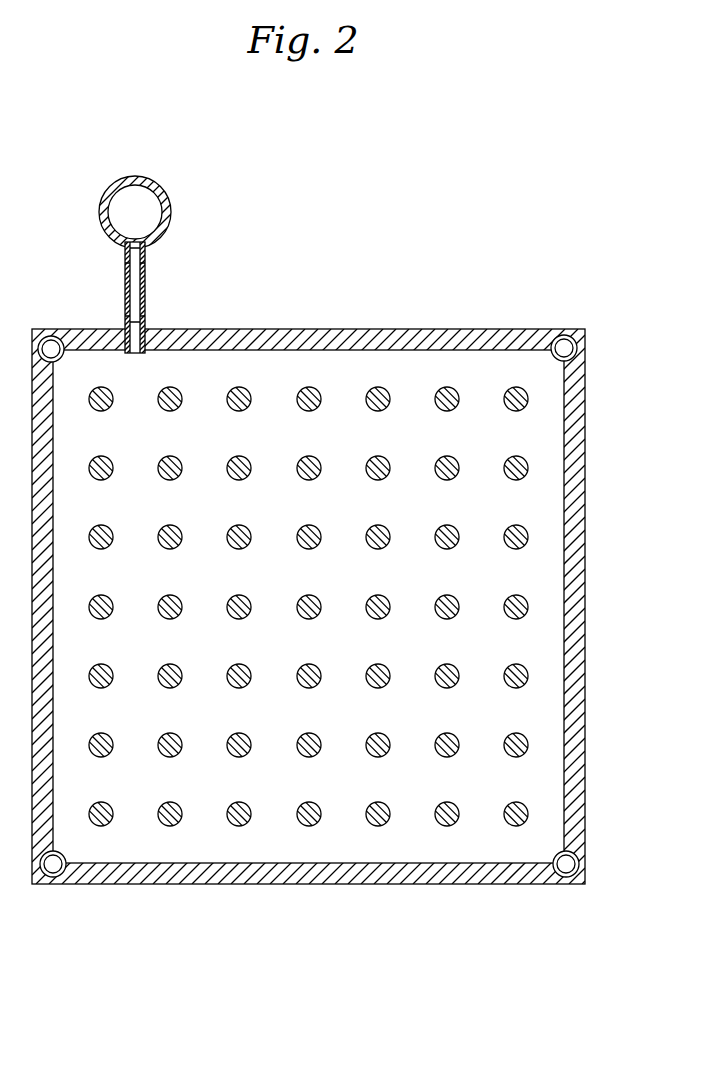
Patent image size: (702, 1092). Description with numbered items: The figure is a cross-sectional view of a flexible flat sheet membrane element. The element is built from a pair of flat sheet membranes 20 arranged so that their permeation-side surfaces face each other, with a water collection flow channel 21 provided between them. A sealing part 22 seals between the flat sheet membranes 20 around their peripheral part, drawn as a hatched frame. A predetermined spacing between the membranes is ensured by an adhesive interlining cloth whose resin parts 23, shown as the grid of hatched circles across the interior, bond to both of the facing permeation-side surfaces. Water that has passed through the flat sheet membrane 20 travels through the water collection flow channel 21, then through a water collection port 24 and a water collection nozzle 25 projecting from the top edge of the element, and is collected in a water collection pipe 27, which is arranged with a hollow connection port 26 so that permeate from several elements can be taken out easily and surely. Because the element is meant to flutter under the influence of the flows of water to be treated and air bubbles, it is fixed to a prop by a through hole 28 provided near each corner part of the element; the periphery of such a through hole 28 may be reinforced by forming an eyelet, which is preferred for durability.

The flat sheet membrane 20 is at (301, 547).
The water collection flow channel 21 is at (266, 392).
The sealing part 22 is at (410, 338).
The resin parts 23 is at (376, 387).
The water collection port 24 is at (144, 340).
The water collection nozzle 25 is at (144, 293).
The connection port 26 is at (144, 250).
The water collection pipe 27 is at (136, 179).
The through hole 28 is at (50, 340).